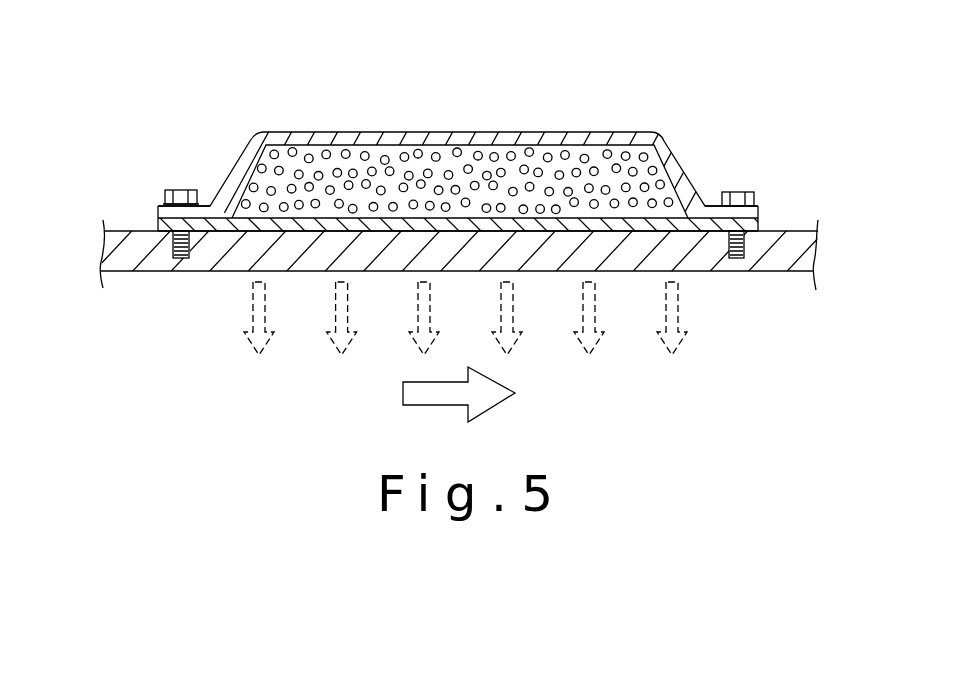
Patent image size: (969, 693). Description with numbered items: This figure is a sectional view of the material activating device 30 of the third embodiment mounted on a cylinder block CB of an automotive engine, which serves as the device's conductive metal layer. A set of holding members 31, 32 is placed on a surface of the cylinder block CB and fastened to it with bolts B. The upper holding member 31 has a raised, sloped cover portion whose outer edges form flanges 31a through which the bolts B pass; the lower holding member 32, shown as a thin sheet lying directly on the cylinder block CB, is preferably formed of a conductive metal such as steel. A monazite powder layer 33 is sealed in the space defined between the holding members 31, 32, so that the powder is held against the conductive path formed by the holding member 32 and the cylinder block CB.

The material activating device 30 is at (451, 185).
The holding member 31 is at (504, 151).
The flange of cover 31a is at (757, 213).
The holding member 32 is at (616, 245).
The monazite powder layer 33 is at (549, 145).
The bolts B is at (177, 190).
The cylinder block CB is at (200, 272).